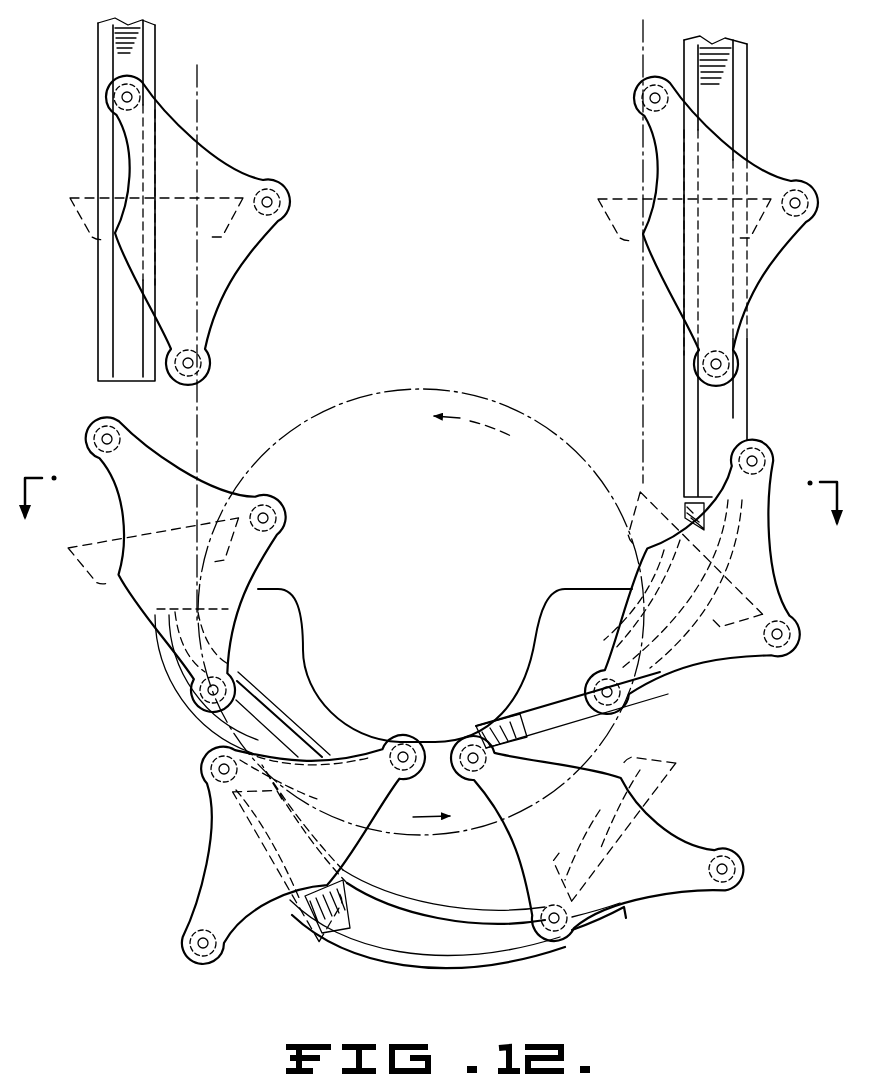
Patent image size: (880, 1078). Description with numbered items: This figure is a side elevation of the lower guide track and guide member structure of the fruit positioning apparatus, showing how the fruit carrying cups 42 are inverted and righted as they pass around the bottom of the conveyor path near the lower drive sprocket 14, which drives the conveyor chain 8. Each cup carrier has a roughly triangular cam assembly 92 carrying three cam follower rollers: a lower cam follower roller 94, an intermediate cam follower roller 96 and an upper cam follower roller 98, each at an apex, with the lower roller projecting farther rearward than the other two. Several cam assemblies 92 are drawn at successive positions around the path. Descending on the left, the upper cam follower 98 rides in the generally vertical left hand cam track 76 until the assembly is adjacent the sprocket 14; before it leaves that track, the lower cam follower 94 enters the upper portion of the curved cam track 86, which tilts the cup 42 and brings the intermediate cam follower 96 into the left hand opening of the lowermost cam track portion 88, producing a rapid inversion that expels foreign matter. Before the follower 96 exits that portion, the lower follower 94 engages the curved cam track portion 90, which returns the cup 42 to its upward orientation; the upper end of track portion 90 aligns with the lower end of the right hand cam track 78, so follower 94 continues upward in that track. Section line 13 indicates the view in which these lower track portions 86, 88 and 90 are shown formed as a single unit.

The driven chain 8 is at (200, 423).
The section line 13- 13 is at (431, 518).
The lower drive sprocket 14 is at (422, 387).
The fruit carrying cup 42 is at (70, 200).
The left hand cam track 76 is at (119, 319).
The right hand cam track 78 is at (722, 407).
The curved cam track 86 is at (177, 648).
The lowermost cam track portion 88 is at (412, 938).
The curved cam track portion 90 is at (556, 701).
The cam assembly 92 is at (224, 156).
The lower cam follower roller 94 is at (210, 364).
The intermediate cam follower roller 96 is at (286, 208).
The upper cam follower roller 98 is at (107, 79).